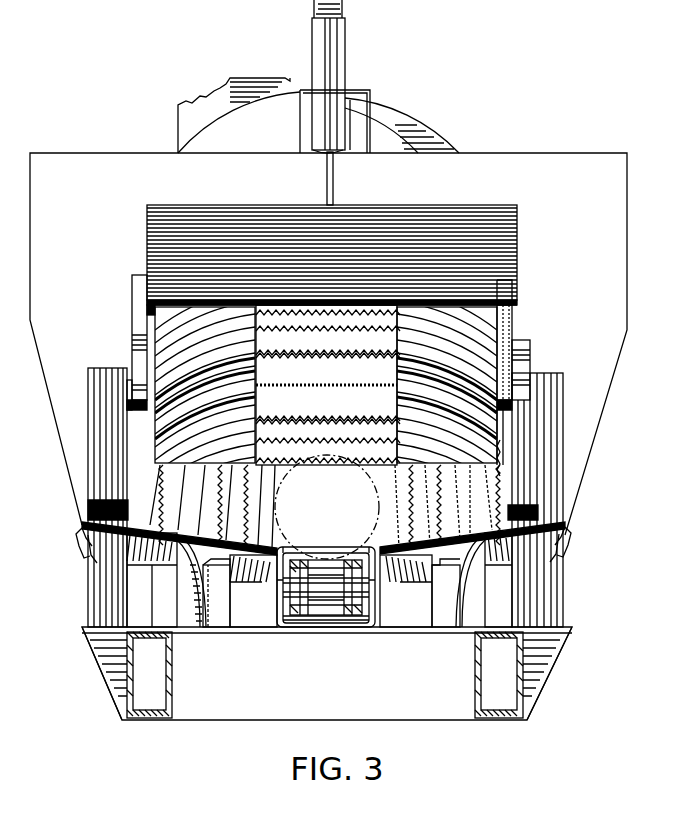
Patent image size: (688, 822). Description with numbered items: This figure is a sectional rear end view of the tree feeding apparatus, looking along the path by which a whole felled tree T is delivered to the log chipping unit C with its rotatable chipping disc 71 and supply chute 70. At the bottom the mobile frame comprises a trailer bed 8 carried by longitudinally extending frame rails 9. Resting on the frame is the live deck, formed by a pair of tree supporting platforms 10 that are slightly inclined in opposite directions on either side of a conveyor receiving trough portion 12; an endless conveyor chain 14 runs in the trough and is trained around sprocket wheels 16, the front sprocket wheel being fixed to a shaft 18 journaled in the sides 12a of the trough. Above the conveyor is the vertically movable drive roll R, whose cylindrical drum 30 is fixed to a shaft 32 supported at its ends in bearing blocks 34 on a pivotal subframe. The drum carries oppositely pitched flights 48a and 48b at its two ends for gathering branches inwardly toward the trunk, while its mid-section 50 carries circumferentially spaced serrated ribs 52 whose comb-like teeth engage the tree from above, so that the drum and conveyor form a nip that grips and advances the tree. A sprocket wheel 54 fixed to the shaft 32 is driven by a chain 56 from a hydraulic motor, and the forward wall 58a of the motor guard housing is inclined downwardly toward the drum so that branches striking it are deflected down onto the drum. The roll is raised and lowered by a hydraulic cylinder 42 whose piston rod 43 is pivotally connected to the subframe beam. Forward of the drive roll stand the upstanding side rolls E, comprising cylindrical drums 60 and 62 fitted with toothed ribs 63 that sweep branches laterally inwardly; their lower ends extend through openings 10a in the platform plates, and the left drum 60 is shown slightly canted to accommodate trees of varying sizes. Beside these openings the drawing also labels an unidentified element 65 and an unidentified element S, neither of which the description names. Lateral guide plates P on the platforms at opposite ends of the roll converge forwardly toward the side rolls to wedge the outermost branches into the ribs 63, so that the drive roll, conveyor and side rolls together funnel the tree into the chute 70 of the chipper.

The hydraulic cylinder 42 is at (345, 39).
The log chipping unit C is at (423, 108).
The shell S is at (178, 124).
The chipping disc 71 is at (360, 125).
The piston rod 43 is at (336, 185).
The forward wall of the motor guard housing 58a is at (147, 258).
The drive roll R is at (145, 312).
The chain 56 is at (512, 308).
The cylindrical drum 30 is at (512, 330).
The bearing blocks 34 is at (139, 367).
The shaft 32 is at (126, 382).
The flights 48a is at (455, 392).
The flights 48b is at (228, 379).
The serrated ribs 52 is at (328, 385).
The sprocket wheel 54 is at (505, 437).
The lateral guide plates P is at (104, 427).
The cylindrical drum 60 is at (126, 506).
The cylindrical drum 62 is at (520, 495).
The tree supporting platforms 10 is at (92, 546).
The toothed ribs 63 is at (222, 506).
The mid-section of the drum 50 is at (333, 470).
The upstanding side rolls E is at (394, 517).
The tree T is at (370, 524).
The endless conveyor chain 14 is at (321, 550).
The openings 10a is at (256, 562).
The wedge 65 is at (241, 569).
The shaft 18 is at (233, 596).
The supply chute 70 is at (405, 550).
The conveyor receiving trough portion 12 is at (375, 574).
The sides of the trough 12a is at (366, 608).
The sprocket wheels 16 is at (314, 627).
The trailer bed 8 is at (88, 645).
The frame rails 9 is at (127, 682).